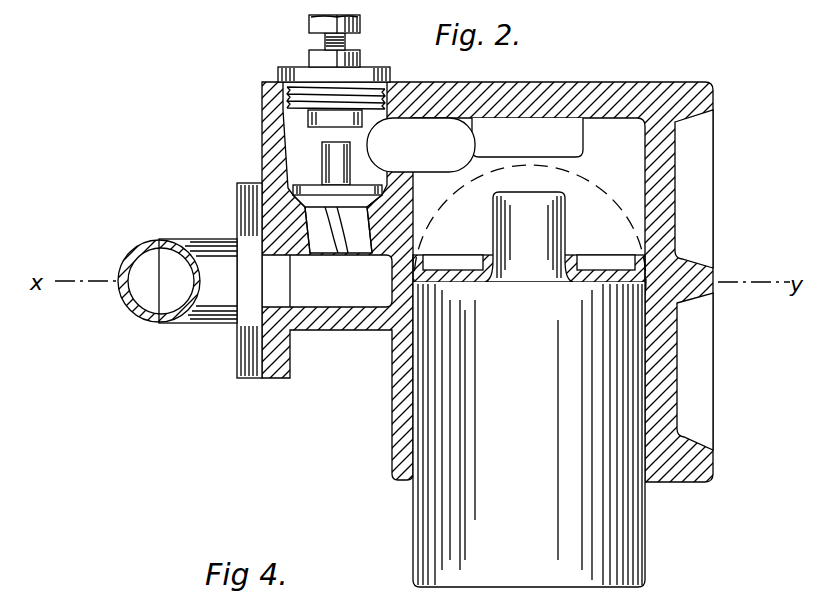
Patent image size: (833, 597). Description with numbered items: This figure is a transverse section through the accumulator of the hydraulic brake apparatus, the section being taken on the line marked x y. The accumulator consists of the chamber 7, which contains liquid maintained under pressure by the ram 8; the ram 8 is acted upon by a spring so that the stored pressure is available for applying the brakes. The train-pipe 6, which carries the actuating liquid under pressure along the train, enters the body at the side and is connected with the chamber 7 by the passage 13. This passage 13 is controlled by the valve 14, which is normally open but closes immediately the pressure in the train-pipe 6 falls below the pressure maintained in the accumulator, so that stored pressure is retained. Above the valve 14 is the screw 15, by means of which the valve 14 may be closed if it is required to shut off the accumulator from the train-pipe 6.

The train-pipe 6 is at (190, 280).
The chamber 7 is at (590, 231).
The ram 8 is at (529, 434).
The passage 13 is at (368, 212).
The valve 14 is at (338, 230).
The screw 15 is at (324, 41).